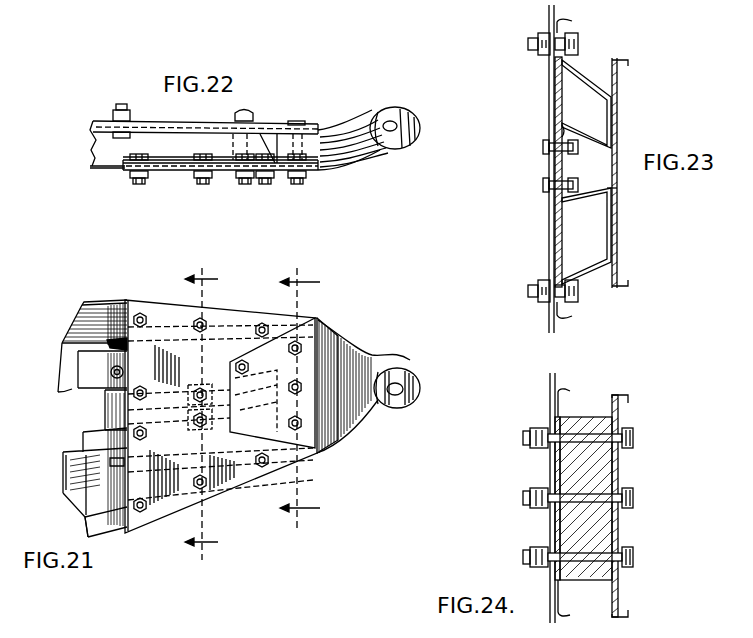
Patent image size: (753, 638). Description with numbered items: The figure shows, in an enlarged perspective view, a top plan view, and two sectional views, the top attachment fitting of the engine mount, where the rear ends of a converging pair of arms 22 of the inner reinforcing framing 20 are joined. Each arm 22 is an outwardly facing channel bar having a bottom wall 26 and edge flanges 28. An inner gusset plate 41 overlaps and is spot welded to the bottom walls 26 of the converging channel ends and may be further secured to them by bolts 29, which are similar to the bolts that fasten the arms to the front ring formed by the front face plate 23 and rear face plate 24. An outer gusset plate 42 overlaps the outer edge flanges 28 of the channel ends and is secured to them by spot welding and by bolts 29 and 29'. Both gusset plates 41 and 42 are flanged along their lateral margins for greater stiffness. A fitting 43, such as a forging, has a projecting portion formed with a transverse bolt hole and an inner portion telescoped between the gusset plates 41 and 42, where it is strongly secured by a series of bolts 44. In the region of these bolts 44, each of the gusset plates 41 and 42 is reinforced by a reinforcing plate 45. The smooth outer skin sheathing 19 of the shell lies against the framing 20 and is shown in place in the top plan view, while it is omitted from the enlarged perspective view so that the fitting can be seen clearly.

In FIG. 22, the skin sheathing 19 is at (115, 169).
In FIG. 23, the skin sheathing 19 is at (551, 264).
In FIG. 24, the skin sheathing 19 is at (549, 528).
In FIG. 21, the reinforcing framing 20 is at (67, 326).
In FIG. 22, the arms 22 is at (177, 151).
In FIG. 21, the arms 22 is at (58, 373).
In FIG. 23, the arms 22 is at (588, 80).
In FIG. 21, the front face plate 23 is at (190, 415).
In FIG. 21, the rear face plate 24 is at (306, 396).
In FIG. 23, the bottom wall 26 is at (618, 117).
In FIG. 21, the edge flanges 28 is at (107, 313).
In FIG. 23, the edge flanges 28 is at (569, 24).
In FIG. 22, the bolts 29 is at (209, 146).
In FIG. 21, the bolts 29 is at (189, 404).
In FIG. 23, the bolts 29 is at (546, 181).
In FIG. 21, the bolts 29' is at (208, 394).
In FIG. 23, the bolts 29' is at (541, 166).
In FIG. 21, the inner gusset plate 41 is at (110, 420).
In FIG. 23, the inner gusset plate 41 is at (617, 190).
In FIG. 24, the inner gusset plate 41 is at (620, 410).
In FIG. 22, the outer gusset plate 42 is at (223, 163).
In FIG. 21, the outer gusset plate 42 is at (160, 315).
In FIG. 23, the outer gusset plate 42 is at (557, 234).
In FIG. 22, the fitting 43 is at (332, 165).
In FIG. 21, the fitting 43 is at (333, 348).
In FIG. 24, the fitting 43 is at (594, 584).
In FIG. 21, the bolts 44 is at (248, 368).
In FIG. 24, the bolts 44 is at (587, 434).
In FIG. 22, the reinforcing plate 45 is at (167, 122).
In FIG. 21, the reinforcing plate 45 is at (317, 453).
In FIG. 24, the reinforcing plate 45 is at (548, 477).